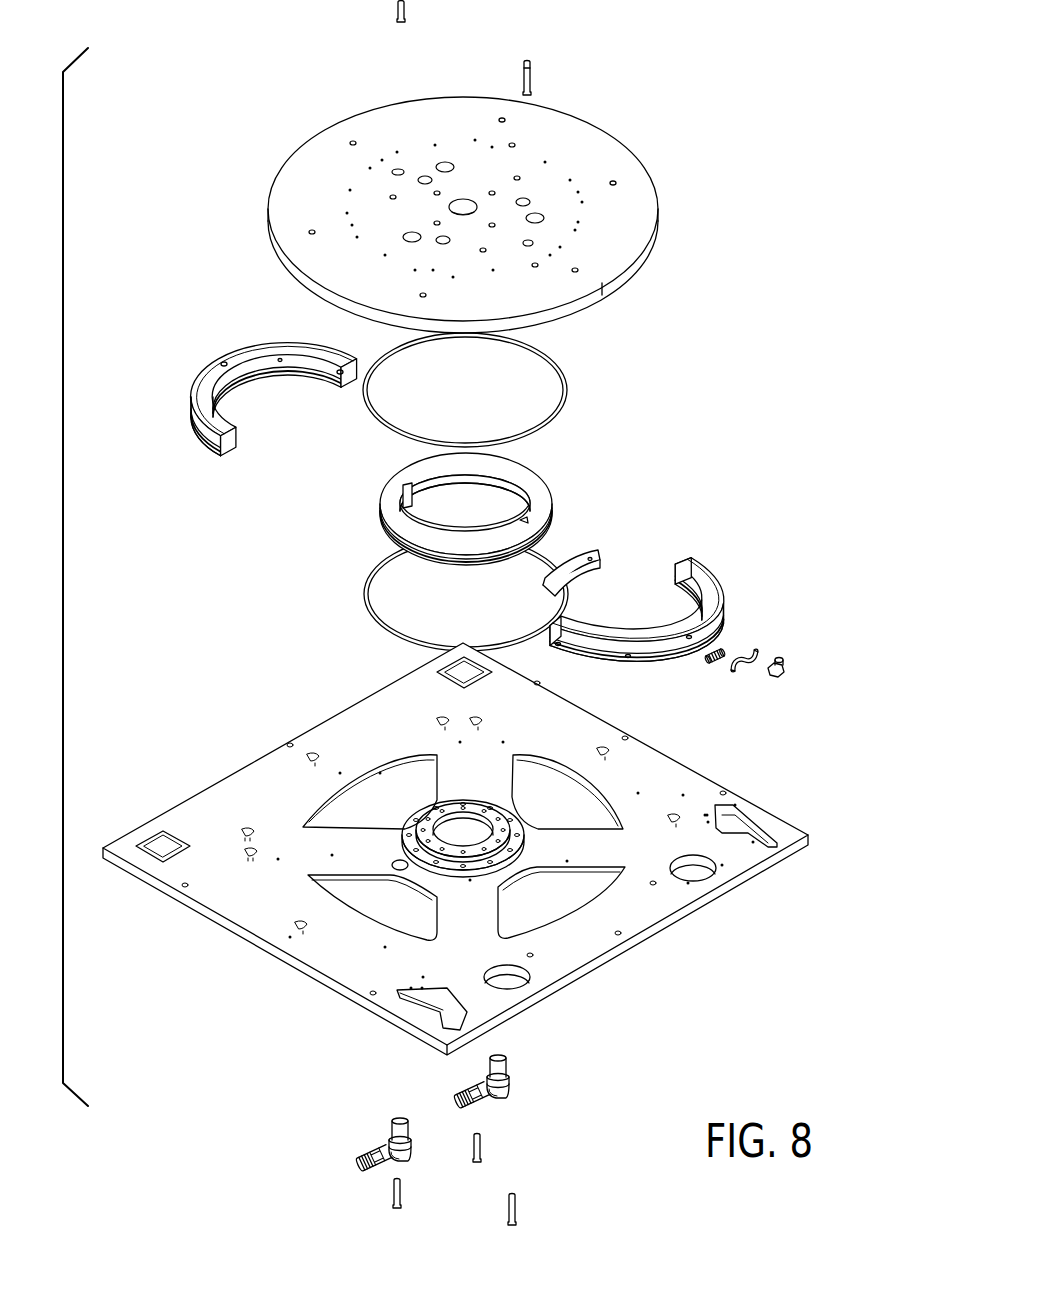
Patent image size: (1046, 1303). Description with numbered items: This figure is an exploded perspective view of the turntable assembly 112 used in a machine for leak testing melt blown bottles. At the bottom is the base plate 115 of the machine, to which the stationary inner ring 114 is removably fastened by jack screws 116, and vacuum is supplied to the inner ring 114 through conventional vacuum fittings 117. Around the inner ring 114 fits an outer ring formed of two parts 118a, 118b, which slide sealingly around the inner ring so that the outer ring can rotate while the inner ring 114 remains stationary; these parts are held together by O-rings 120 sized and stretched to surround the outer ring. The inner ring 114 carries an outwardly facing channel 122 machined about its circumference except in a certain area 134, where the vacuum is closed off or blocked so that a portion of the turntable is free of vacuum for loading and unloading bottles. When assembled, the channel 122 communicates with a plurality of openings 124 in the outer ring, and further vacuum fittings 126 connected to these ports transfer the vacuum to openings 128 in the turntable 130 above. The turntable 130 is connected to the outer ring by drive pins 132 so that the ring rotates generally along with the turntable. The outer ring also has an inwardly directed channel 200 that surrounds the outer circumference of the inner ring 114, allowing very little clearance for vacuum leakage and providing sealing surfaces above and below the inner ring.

The turntable assembly 112 is at (295, 72).
The drive pins 132 is at (521, 78).
The turntable 130 is at (505, 208).
The openings 128 is at (505, 120).
The O-rings 120 is at (548, 358).
The stationary inner ring 114 is at (456, 503).
The channel 122 is at (385, 535).
The area 134 is at (535, 545).
The outer ring part 118a is at (708, 566).
The outer ring part 118b is at (268, 345).
The inwardly directed channel 200 is at (314, 356).
The openings 124 is at (340, 374).
The vacuum fittings 126 is at (792, 660).
The base plate 115 is at (665, 762).
The vacuum fittings 117 is at (470, 1086).
The jack screws 116 is at (476, 1150).